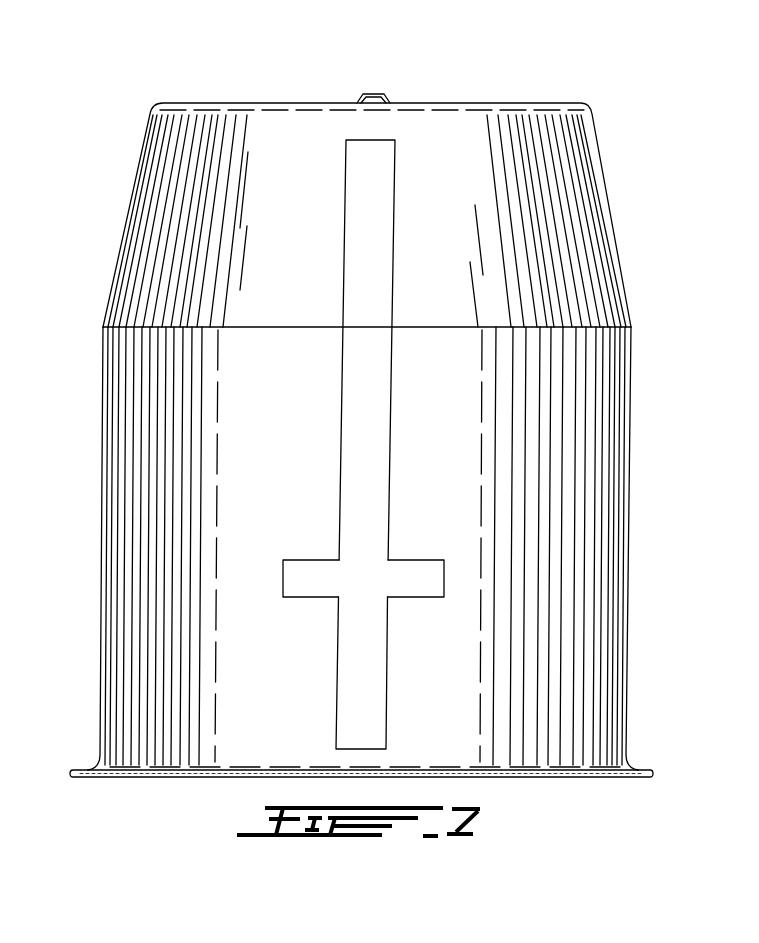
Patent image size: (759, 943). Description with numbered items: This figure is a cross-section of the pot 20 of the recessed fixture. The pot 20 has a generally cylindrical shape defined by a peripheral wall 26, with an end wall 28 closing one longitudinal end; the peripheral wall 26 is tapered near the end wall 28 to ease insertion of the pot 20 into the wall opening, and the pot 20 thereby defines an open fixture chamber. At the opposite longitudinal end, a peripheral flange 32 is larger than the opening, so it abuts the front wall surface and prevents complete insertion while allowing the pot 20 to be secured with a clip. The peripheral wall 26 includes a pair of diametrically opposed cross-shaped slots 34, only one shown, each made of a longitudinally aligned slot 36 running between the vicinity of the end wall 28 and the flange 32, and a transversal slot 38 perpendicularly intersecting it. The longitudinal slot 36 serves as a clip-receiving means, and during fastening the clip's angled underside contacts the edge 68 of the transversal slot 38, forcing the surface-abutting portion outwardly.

The pot 20 is at (610, 175).
The peripheral wall 26 is at (630, 498).
The end wall 28 is at (492, 103).
The peripheral flange 32 is at (645, 770).
The cross-shaped slot 34 is at (335, 290).
The longitudinally aligned slot 36 is at (378, 306).
The transversal slot 38 is at (427, 578).
The edge 68 is at (311, 597).